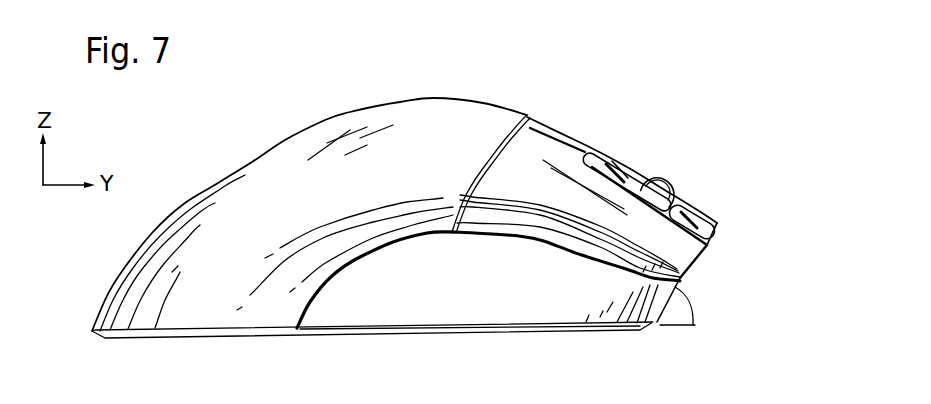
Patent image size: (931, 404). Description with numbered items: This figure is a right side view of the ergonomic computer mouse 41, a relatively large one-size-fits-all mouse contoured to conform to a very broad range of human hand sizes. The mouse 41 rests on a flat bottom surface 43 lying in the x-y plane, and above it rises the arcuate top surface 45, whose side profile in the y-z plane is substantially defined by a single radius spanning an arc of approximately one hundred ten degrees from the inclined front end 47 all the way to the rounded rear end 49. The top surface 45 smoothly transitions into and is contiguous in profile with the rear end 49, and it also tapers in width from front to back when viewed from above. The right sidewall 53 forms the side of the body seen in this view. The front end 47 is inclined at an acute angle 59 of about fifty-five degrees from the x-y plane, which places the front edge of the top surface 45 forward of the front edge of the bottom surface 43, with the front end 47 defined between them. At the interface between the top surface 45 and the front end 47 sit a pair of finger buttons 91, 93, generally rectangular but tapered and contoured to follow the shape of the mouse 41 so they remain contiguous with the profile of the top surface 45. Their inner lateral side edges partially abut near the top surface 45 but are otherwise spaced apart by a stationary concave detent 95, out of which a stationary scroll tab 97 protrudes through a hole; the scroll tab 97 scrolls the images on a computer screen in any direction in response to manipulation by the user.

The ergonomic computer mouse 41 is at (211, 117).
The bottom surface 43 is at (355, 346).
The top surface 45 is at (377, 117).
The front end 47 is at (681, 277).
The rear end 49 is at (110, 297).
The right sidewall 53 is at (430, 303).
The acute angle 59 is at (690, 305).
The finger button 91 is at (550, 123).
The finger button 93 is at (563, 156).
The concave detent 95 is at (717, 228).
The scroll tab 97 is at (663, 181).